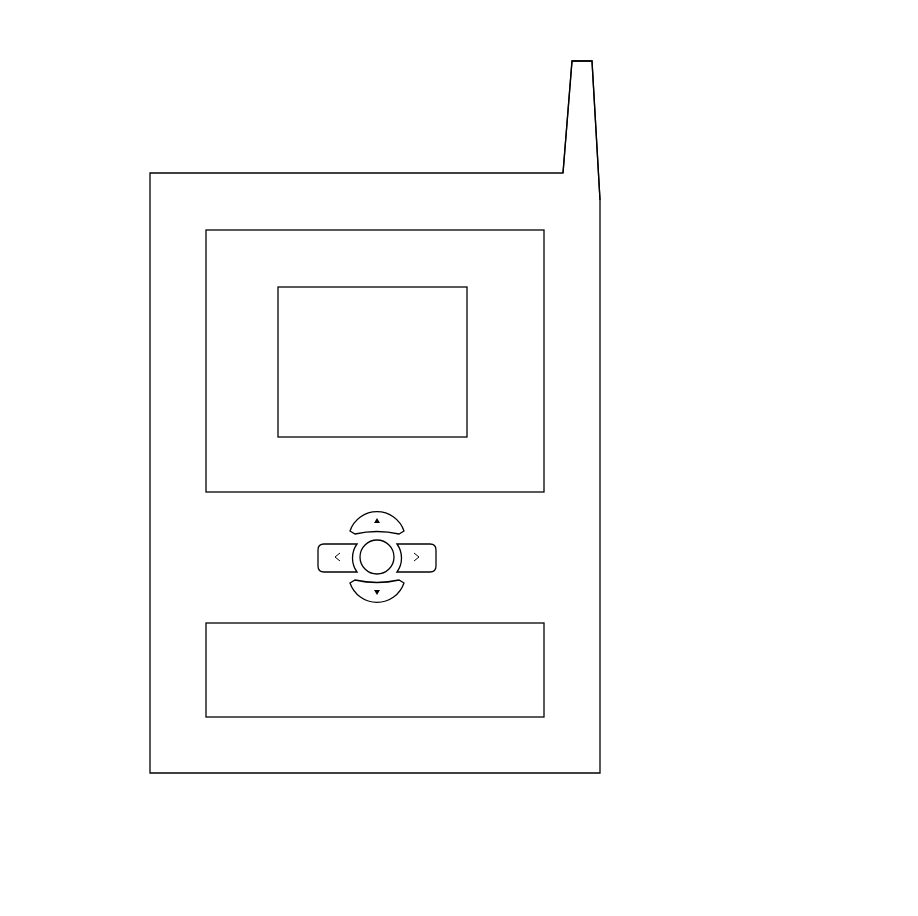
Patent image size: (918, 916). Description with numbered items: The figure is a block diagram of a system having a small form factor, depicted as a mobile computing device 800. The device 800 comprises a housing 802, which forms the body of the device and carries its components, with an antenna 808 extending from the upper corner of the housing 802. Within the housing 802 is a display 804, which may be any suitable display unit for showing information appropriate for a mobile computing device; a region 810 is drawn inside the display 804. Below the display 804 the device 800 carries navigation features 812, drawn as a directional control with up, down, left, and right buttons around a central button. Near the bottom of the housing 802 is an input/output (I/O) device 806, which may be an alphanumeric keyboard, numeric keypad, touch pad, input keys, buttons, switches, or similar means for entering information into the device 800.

The device 800 is at (164, 75).
The housing 802 is at (447, 417).
The display 804 is at (544, 249).
The input/output (I/O) device 806 is at (544, 661).
The antenna 808 is at (568, 110).
The display window 810 is at (544, 380).
The navigation features 812 is at (455, 547).